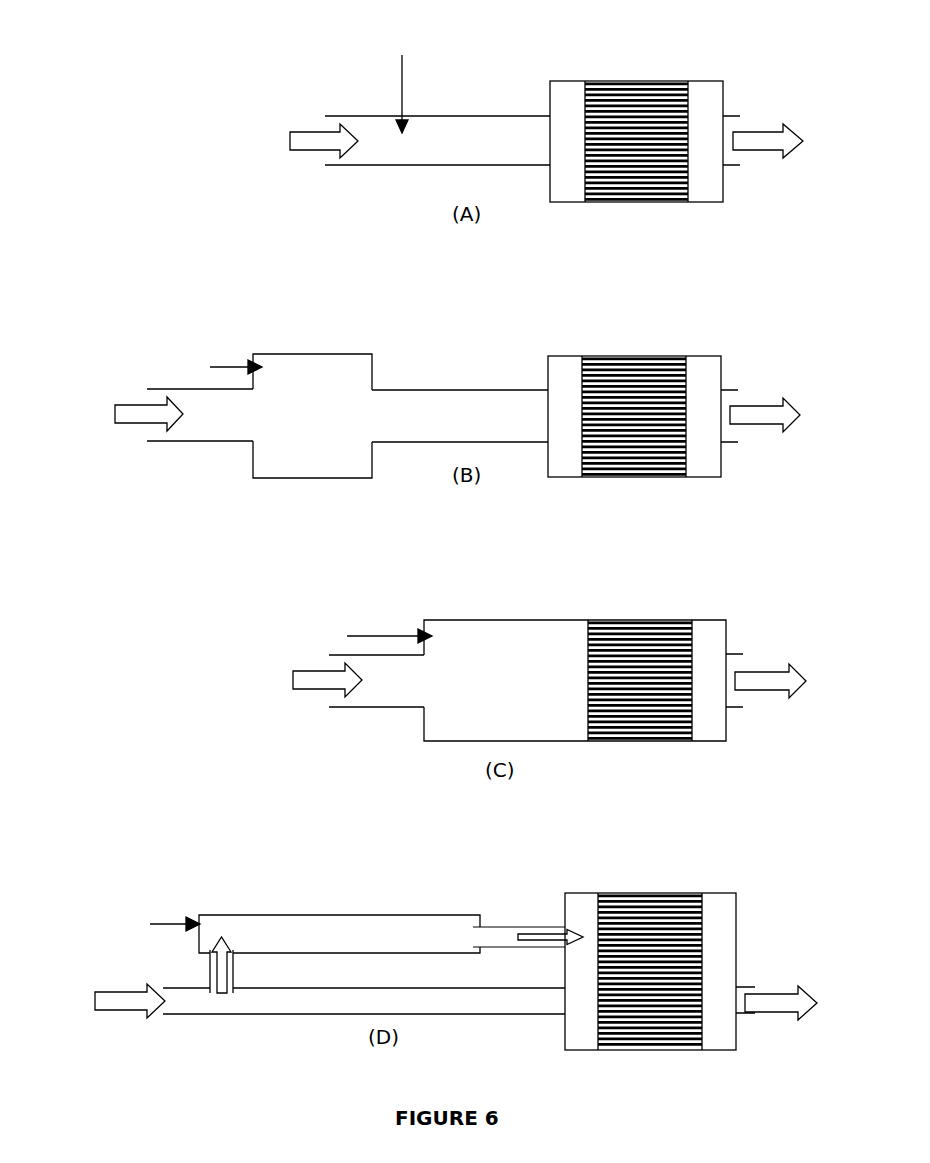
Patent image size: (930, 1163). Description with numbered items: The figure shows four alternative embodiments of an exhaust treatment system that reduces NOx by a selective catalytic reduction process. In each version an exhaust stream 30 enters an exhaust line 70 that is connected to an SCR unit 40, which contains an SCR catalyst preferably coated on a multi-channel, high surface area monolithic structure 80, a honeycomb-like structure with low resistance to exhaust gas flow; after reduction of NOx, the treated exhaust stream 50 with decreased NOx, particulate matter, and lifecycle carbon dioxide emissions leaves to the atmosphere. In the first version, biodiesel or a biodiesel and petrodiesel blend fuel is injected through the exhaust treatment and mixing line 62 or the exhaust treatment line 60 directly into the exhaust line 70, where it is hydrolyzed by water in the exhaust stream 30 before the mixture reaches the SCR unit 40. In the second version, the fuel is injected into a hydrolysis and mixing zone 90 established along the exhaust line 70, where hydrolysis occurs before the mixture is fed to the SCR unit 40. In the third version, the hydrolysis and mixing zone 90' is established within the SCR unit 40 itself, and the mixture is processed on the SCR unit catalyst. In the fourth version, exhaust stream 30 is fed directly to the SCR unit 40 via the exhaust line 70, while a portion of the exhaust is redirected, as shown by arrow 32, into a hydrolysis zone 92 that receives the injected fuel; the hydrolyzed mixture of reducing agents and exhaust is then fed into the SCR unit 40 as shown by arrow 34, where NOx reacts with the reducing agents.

In FIG. 6A, the exhaust stream 30 is at (298, 116).
In FIG. 6B, the exhaust stream 30 is at (121, 391).
In FIG. 6C, the exhaust stream 30 is at (292, 659).
In FIG. 6D, the exhaust stream 30 is at (95, 1019).
In FIG. 6D, the arrow 32 is at (167, 964).
In FIG. 6D, the arrow 34 is at (505, 899).
In FIG. 6A, the SCR unit 40 is at (645, 118).
In FIG. 6B, the SCR unit 40 is at (643, 393).
In FIG. 6C, the SCR unit 40 is at (649, 658).
In FIG. 6D, the SCR unit 40 is at (660, 949).
In FIG. 6A, the treated exhaust stream 50 is at (776, 115).
In FIG. 6B, the treated exhaust stream 50 is at (773, 388).
In FIG. 6C, the treated exhaust stream 50 is at (776, 654).
In FIG. 6D, the treated exhaust stream 50 is at (786, 978).
In FIG. 6A, the exhaust treatment line 60 is at (339, 81).
In FIG. 6B, the exhaust treatment line 60 is at (173, 346).
In FIG. 6C, the exhaust treatment line 60 is at (347, 608).
In FIG. 6D, the exhaust treatment line 60 is at (119, 906).
In FIG. 6A, the exhaust treatment and mixing line 62 is at (339, 81).
In FIG. 6B, the exhaust treatment and mixing line 62 is at (173, 346).
In FIG. 6C, the exhaust treatment and mixing line 62 is at (347, 608).
In FIG. 6D, the exhaust treatment and mixing line 62 is at (119, 906).
In FIG. 6A, the exhaust line 70 is at (435, 167).
In FIG. 6B, the exhaust line 70 is at (339, 439).
In FIG. 6C, the exhaust line 70 is at (366, 704).
In FIG. 6D, the exhaust line 70 is at (352, 1007).
In FIG. 6A, the monolithic structure 80 is at (648, 109).
In FIG. 6B, the monolithic structure 80 is at (638, 383).
In FIG. 6C, the monolithic structure 80 is at (640, 648).
In FIG. 6D, the monolithic structure 80 is at (656, 940).
In FIG. 6B, the hydrolysis and mixing zone 90 is at (312, 394).
In FIG. 6C, the hydrolysis and mixing zone 90' is at (506, 657).
In FIG. 6D, the hydrolysis zone 92 is at (382, 906).